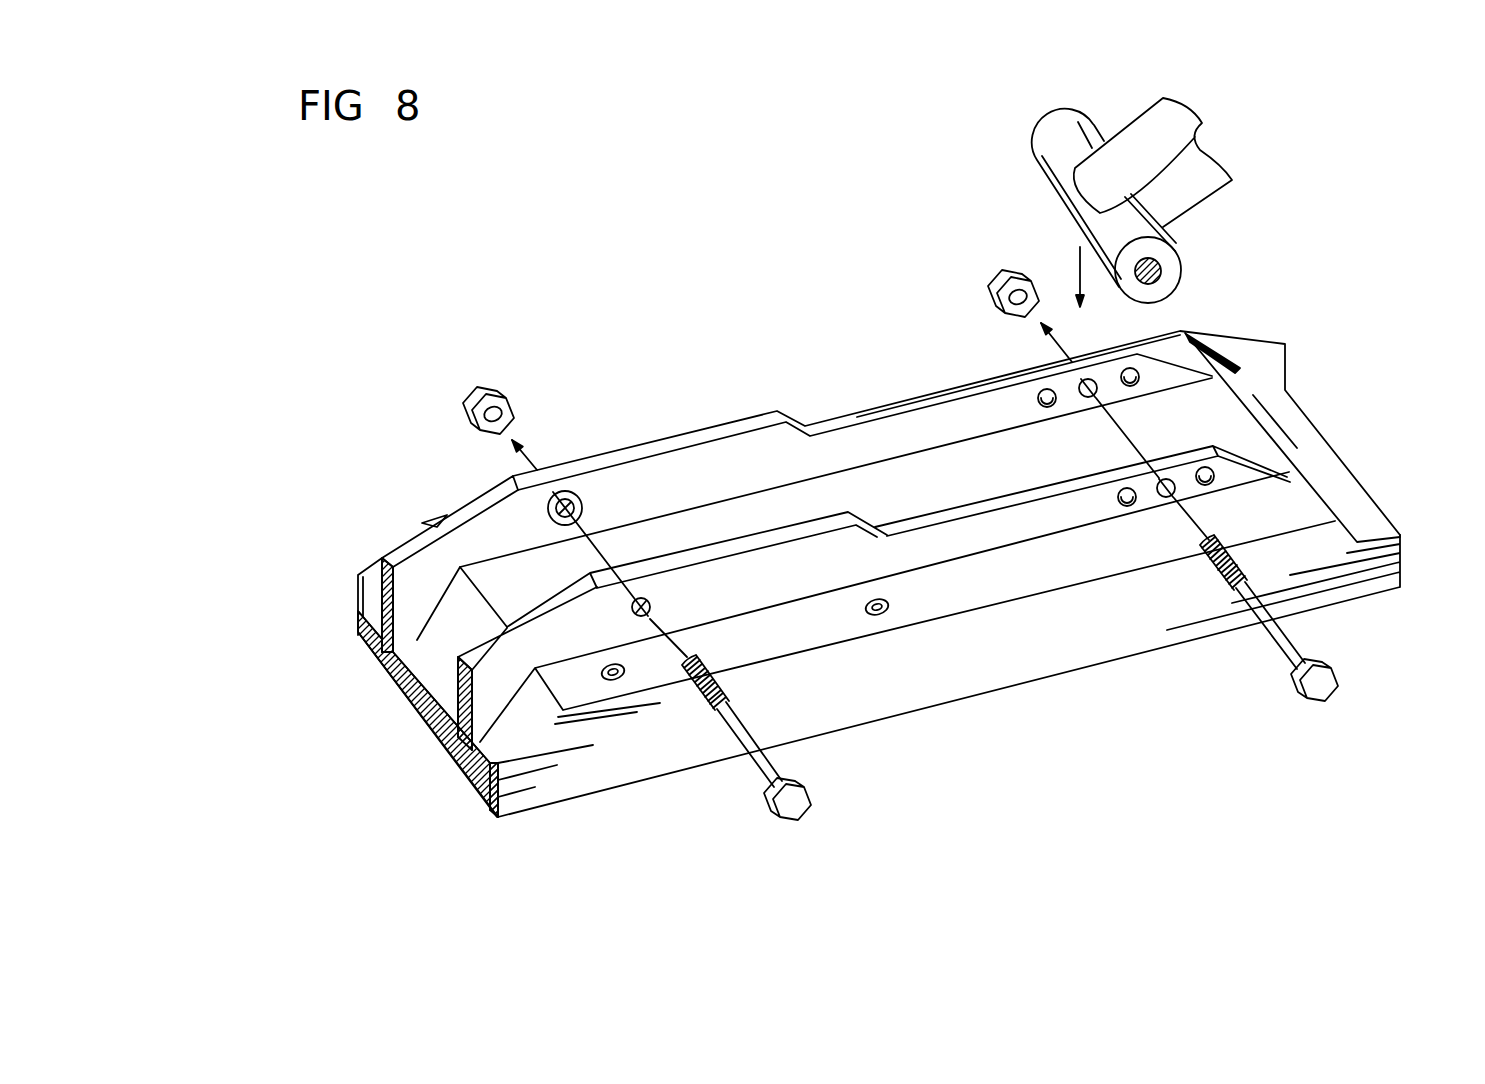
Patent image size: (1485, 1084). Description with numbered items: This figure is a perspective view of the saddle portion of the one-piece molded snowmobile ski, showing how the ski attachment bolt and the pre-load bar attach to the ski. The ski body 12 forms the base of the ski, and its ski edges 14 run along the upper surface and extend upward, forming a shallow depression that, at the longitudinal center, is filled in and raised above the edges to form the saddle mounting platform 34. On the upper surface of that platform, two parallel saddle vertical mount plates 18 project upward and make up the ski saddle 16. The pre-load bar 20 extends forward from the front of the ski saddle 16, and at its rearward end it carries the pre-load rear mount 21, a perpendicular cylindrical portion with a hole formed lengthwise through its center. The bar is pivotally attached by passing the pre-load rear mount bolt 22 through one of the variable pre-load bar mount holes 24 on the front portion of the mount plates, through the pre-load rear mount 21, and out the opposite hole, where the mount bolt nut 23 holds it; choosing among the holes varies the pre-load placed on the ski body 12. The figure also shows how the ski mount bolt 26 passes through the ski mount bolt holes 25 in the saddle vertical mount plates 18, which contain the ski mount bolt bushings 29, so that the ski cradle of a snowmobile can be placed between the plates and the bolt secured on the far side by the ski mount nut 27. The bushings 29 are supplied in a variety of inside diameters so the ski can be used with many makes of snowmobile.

The ski body 12 is at (347, 612).
The ski edges 14 is at (374, 570).
The ski saddle 16 is at (893, 487).
The saddle vertical mount plates 18 is at (766, 527).
The pre-load bar 20 is at (1197, 162).
The pre-load rear mount 21 is at (1170, 258).
The pre-load rear mount bolt 22 is at (1318, 700).
The mount bolt nut 23 is at (1003, 289).
The variable pre-load bar mount holes 24 is at (1207, 487).
The ski mount bolt holes 25 is at (630, 612).
The ski mount bolt 26 is at (800, 808).
The ski mount nut 27 is at (480, 393).
The ski mount bolt bushings 29 is at (566, 490).
The saddle mounting platform 34 is at (445, 650).